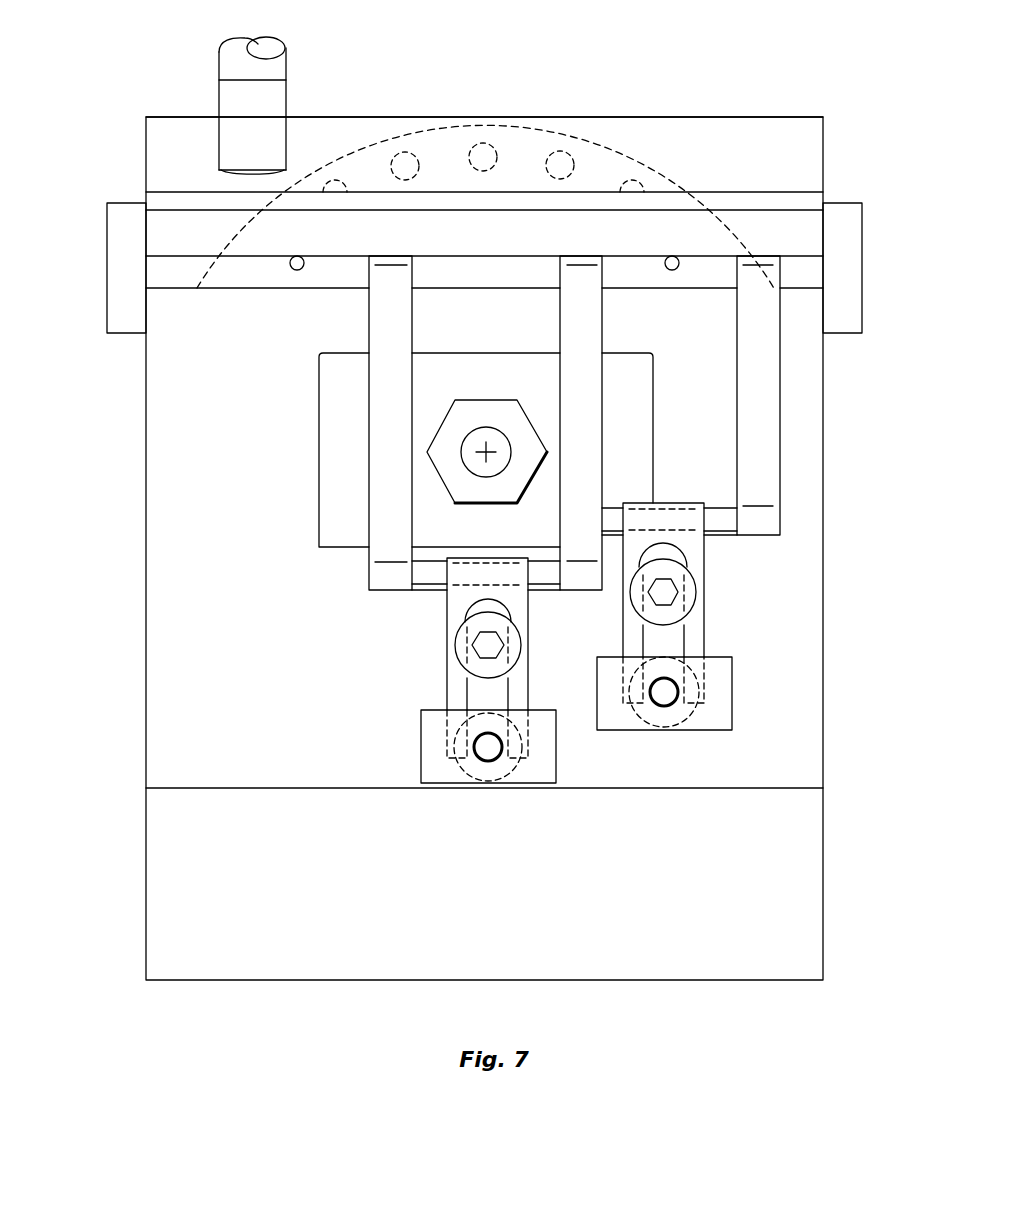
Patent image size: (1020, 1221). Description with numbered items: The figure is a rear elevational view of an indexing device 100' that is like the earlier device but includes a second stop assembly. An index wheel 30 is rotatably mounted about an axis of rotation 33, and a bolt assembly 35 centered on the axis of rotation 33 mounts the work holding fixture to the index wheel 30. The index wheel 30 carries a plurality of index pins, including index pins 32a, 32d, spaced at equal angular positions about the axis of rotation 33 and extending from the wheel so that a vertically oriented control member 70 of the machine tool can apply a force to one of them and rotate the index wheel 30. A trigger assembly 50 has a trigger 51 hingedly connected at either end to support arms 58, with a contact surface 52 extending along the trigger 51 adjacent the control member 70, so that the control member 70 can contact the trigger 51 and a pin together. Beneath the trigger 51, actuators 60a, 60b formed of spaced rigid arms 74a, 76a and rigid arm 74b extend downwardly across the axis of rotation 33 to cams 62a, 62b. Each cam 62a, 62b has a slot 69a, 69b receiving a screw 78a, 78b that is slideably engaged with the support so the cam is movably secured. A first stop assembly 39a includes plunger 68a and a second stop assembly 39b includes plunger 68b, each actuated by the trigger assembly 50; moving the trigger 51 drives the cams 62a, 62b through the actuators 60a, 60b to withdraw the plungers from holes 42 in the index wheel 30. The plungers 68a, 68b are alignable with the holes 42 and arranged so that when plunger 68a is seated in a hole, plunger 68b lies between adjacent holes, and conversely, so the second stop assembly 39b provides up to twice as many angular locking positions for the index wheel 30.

The indexing device 100' is at (432, 548).
The trigger assembly 50 is at (780, 149).
The trigger 51 is at (800, 198).
The contact surface 52 is at (750, 192).
The index wheel 30 is at (464, 134).
The holes 42 is at (638, 188).
The control member 70 is at (290, 73).
The support arms 58 is at (107, 265).
The index pin 32d is at (297, 270).
The index pin 32a is at (672, 270).
The axis of rotation 33 is at (480, 445).
The bolt assembly 35 is at (531, 414).
The rigid arm 74a is at (392, 445).
The rigid arm 76a is at (600, 440).
The rigid arm 74b is at (762, 385).
The actuator 60a is at (358, 555).
The actuator 60b is at (792, 453).
The slot 69a is at (476, 597).
The slot 69b is at (688, 538).
The cam 62a is at (462, 632).
The cam 62b is at (705, 592).
The screw 78a is at (466, 672).
The screw 78b is at (690, 612).
The first stop assembly 39a is at (402, 751).
The second stop assembly 39b is at (752, 707).
The plunger 68a is at (488, 752).
The plunger 68b is at (662, 695).